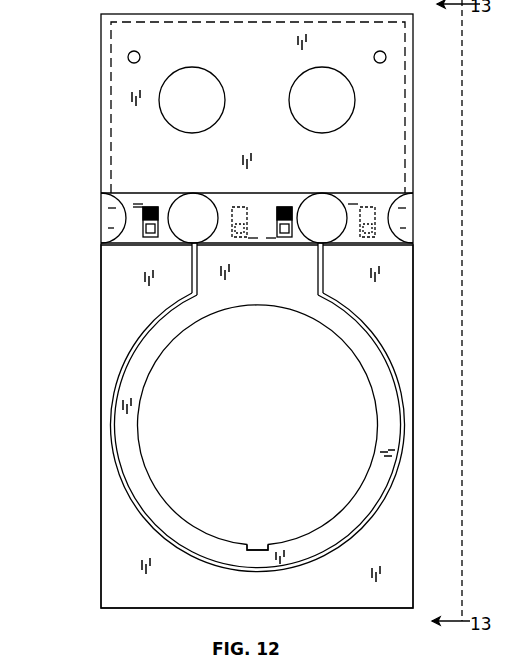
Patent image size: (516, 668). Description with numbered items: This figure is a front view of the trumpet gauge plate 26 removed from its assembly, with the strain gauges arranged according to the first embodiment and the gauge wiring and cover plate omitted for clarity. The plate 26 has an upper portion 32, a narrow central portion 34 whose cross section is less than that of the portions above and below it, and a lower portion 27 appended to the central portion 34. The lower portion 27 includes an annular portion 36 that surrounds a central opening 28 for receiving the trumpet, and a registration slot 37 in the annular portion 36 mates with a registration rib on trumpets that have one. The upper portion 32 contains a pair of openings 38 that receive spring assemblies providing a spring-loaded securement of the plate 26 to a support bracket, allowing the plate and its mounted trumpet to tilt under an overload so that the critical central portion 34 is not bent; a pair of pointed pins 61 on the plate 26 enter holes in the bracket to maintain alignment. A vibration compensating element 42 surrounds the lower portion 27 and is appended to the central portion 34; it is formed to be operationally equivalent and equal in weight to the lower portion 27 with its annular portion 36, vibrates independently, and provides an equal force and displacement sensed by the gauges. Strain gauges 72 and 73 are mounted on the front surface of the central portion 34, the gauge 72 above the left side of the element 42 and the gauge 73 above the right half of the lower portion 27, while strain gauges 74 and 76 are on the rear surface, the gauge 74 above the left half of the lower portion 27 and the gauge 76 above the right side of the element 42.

The trumpet gauge plate 26 is at (84, 322).
The lower portion 27 is at (272, 281).
The central opening 28 is at (162, 434).
The upper portion 32 is at (262, 87).
The central portion 34 is at (380, 228).
The annular portion 36 is at (320, 552).
The registration slot 37 is at (256, 543).
The openings 38 is at (172, 128).
The vibration compensating element 42 is at (131, 278).
The pointed pins 61 is at (139, 52).
The strain gauge 72 is at (154, 207).
The strain gauge 73 is at (292, 207).
The strain gauge 74 is at (246, 207).
The strain gauge 76 is at (367, 207).